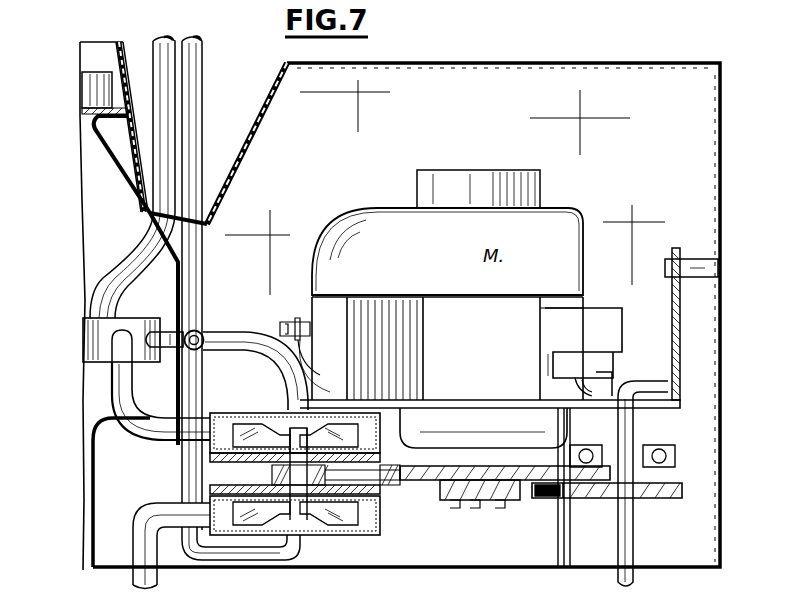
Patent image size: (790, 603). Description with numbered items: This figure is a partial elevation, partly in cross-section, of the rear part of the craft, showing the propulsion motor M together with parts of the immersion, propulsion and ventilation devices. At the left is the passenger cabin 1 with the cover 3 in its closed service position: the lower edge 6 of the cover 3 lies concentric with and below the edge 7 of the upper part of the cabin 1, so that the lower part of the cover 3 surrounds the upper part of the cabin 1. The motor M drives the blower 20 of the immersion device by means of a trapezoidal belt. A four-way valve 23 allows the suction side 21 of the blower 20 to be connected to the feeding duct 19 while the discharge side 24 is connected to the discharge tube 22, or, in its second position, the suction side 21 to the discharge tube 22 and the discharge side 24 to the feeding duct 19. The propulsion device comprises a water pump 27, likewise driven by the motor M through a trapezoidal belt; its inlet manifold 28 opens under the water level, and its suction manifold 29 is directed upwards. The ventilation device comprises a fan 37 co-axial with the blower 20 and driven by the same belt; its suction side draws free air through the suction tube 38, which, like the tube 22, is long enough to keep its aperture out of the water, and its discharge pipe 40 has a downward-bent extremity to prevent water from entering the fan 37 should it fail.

The cabin 1 is at (94, 306).
The cover 3 is at (100, 48).
The lower edge 6 is at (134, 127).
The edge 7 is at (82, 82).
The feeding duct 19 is at (166, 330).
The blower 20 is at (218, 443).
The suction side 21 is at (227, 335).
The discharge tube 22 is at (158, 52).
The four-way valve 23 is at (83, 340).
The discharge side 24 is at (126, 393).
The water pump 27 is at (628, 380).
The inlet manifold 28 is at (556, 534).
The suction manifold 29 is at (618, 534).
The fan 37 is at (380, 519).
The suction tube 38 is at (200, 85).
The discharge pipe 40 is at (150, 583).